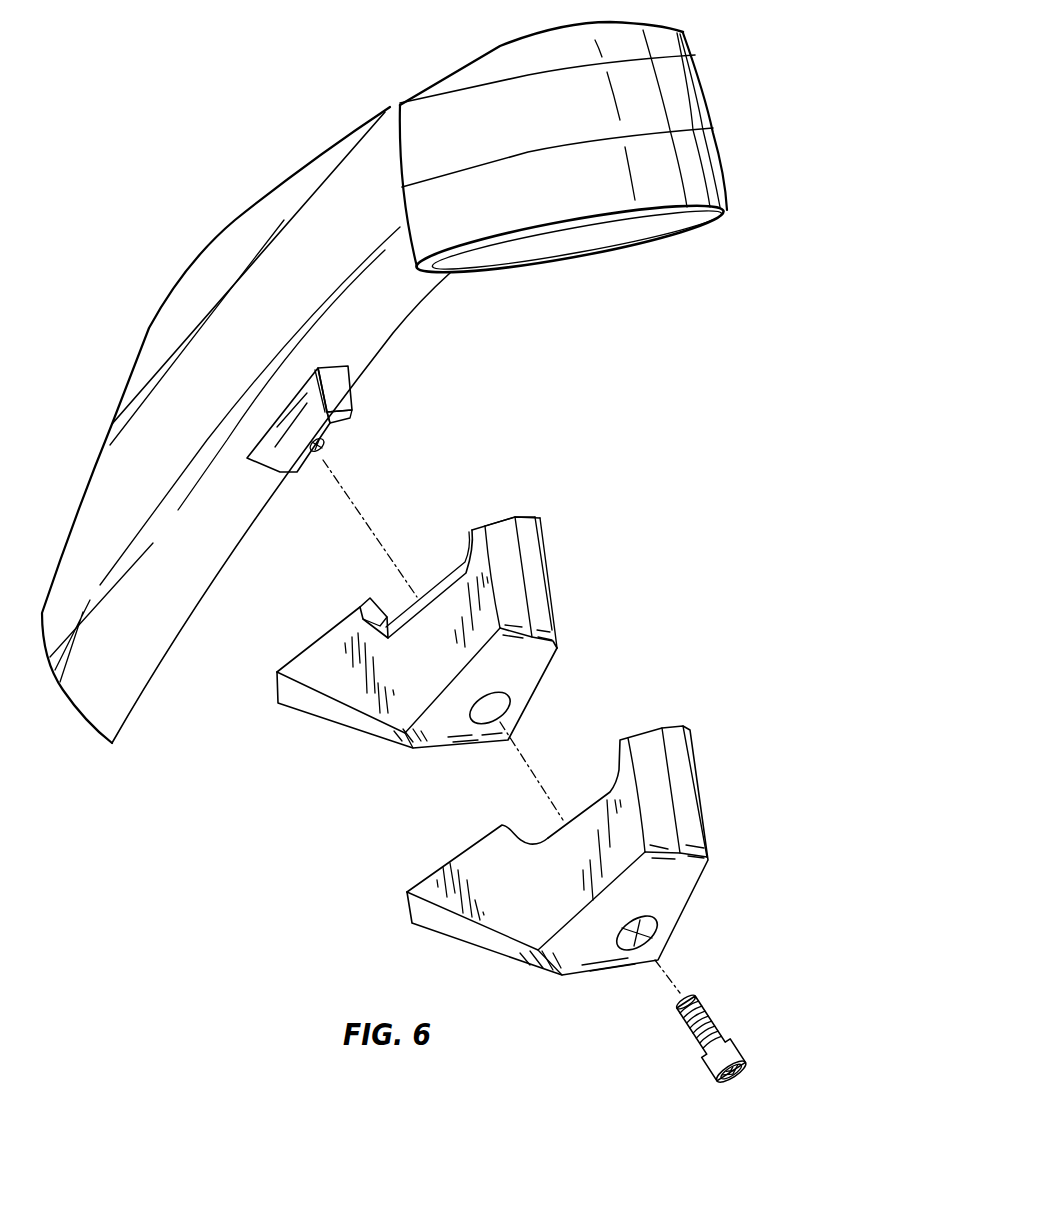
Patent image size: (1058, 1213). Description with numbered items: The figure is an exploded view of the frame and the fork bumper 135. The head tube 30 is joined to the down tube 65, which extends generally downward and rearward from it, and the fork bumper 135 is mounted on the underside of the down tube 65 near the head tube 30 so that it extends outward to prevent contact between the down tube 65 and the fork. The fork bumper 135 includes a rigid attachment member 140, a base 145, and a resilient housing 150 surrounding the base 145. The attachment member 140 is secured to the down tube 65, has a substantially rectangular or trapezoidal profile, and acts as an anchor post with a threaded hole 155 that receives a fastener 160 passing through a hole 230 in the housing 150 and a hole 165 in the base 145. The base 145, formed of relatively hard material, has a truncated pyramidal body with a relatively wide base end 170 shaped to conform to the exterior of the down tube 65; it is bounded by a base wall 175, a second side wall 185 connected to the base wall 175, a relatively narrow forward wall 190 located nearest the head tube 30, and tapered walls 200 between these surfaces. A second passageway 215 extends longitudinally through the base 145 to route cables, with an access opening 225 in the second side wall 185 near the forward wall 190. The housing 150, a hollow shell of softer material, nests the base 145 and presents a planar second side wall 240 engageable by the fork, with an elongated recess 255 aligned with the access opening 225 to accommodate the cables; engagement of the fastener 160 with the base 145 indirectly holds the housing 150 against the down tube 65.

The head tube 30 is at (690, 110).
The down tube 65 is at (398, 303).
The fork bumper 135 is at (697, 424).
The attachment member 140 is at (350, 422).
The base 145 is at (546, 517).
The housing 150 is at (563, 874).
The threaded hole 155 is at (318, 449).
The fastener 160 is at (692, 1035).
The hole 165 is at (507, 718).
The base end 170 is at (437, 618).
The base wall 175 is at (523, 673).
The second side wall 185 is at (342, 690).
The forward wall 190 is at (540, 585).
The tapered walls 200 is at (498, 532).
The second passageway 215 is at (432, 580).
The access opening 225 is at (387, 605).
The hole 230 is at (627, 947).
The second side wall 240 is at (490, 863).
The elongated recess 255 is at (517, 830).